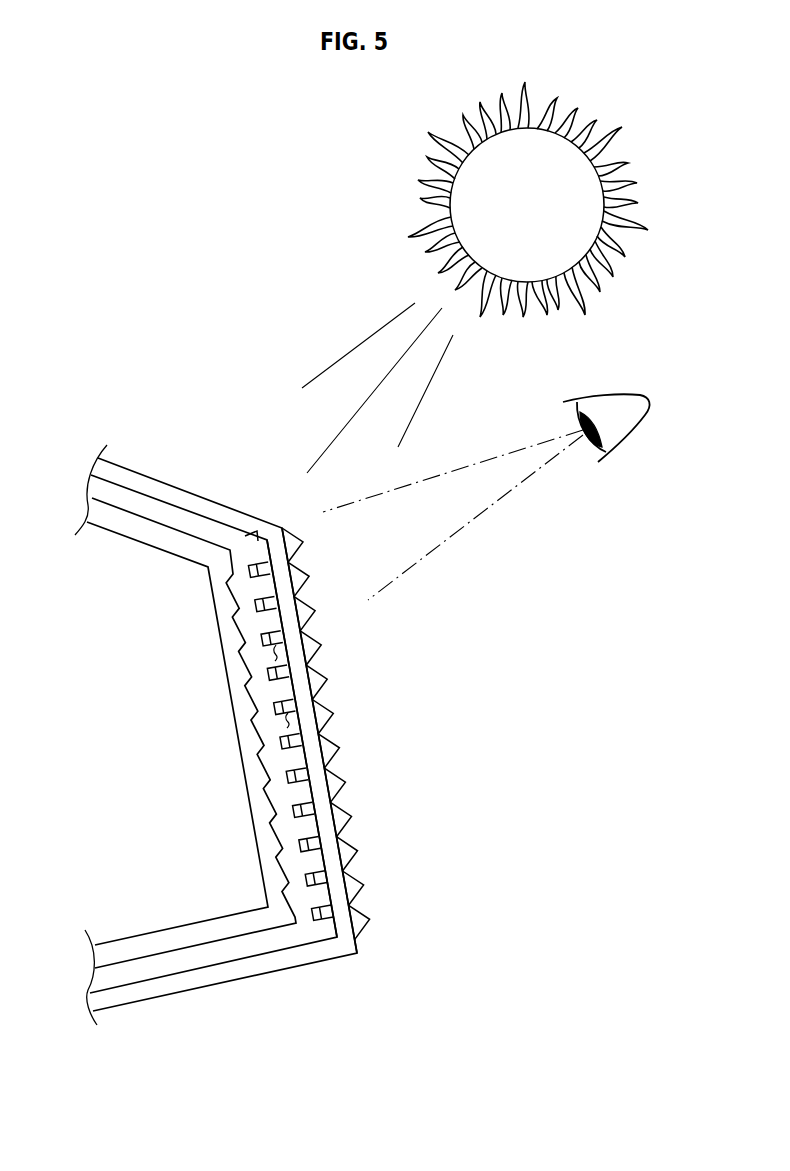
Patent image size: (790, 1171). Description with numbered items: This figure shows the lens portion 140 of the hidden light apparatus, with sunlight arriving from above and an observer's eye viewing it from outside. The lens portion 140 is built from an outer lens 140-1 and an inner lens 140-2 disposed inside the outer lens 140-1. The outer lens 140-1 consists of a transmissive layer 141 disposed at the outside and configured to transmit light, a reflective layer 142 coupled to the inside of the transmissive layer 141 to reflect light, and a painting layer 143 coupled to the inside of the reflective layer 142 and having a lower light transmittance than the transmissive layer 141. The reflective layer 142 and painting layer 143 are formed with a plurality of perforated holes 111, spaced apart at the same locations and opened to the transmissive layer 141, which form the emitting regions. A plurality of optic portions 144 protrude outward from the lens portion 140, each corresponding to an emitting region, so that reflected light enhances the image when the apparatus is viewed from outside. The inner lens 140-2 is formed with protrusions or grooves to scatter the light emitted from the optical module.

The lens portion 140 is at (281, 705).
The outer lens 140-1 is at (165, 490).
The inner lens 140-2 is at (137, 532).
The transmissive layer 141 is at (315, 765).
The reflective layer 142 is at (348, 908).
The painting layer 143 is at (292, 808).
The optic portion 144 is at (321, 720).
The perforated hole 111 is at (287, 720).